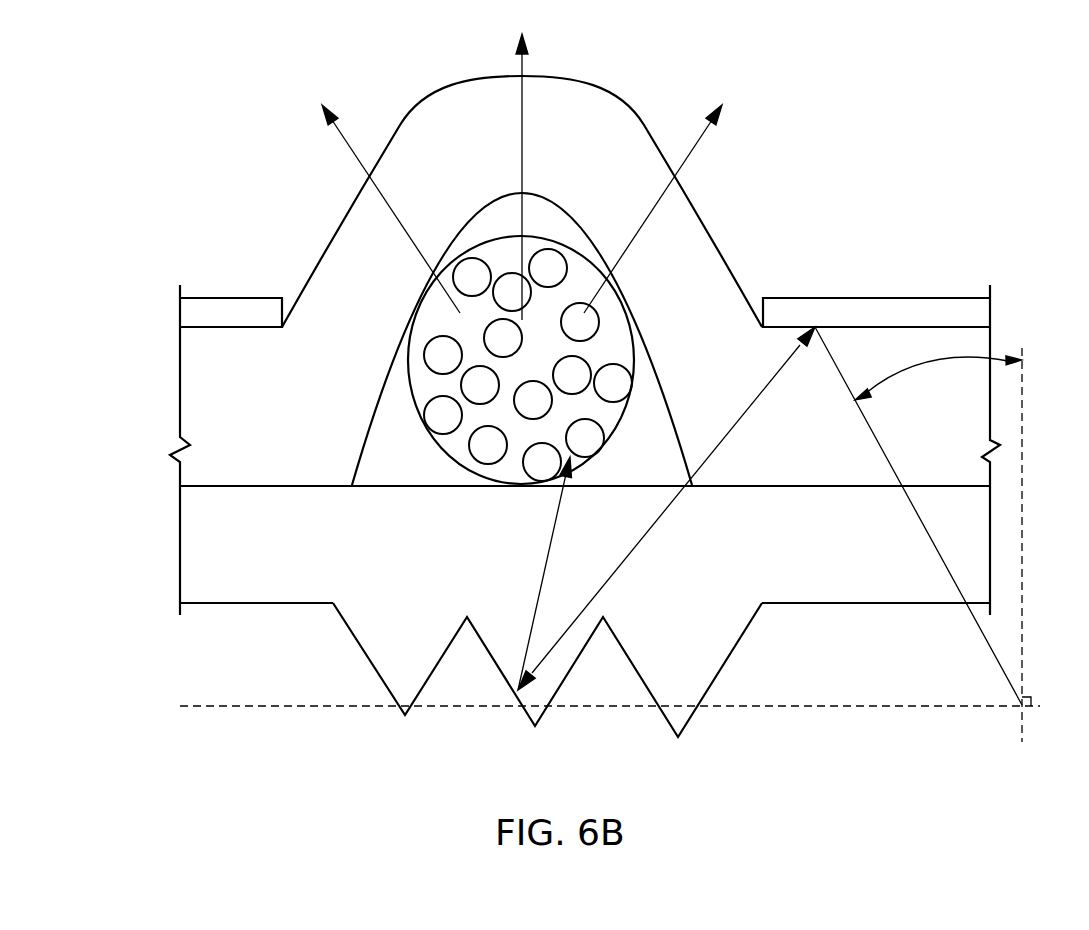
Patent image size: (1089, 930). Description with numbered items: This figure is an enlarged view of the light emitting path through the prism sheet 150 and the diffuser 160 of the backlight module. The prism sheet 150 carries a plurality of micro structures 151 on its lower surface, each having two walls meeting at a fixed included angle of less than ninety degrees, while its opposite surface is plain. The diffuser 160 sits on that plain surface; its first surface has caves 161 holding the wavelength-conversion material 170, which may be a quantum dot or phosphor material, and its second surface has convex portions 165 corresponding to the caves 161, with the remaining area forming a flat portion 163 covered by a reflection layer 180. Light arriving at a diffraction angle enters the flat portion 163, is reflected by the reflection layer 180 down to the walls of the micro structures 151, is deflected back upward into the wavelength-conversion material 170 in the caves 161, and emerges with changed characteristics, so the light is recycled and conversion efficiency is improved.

The prism sheet 150 is at (541, 650).
The micro structures 151 is at (694, 712).
The diffuser 160 is at (178, 391).
The caves 161 is at (668, 429).
The flat portion 163 is at (765, 490).
The convex portions 165 is at (486, 83).
The wavelength-conversion material 170 is at (595, 254).
The reflection layer 180 is at (996, 311).